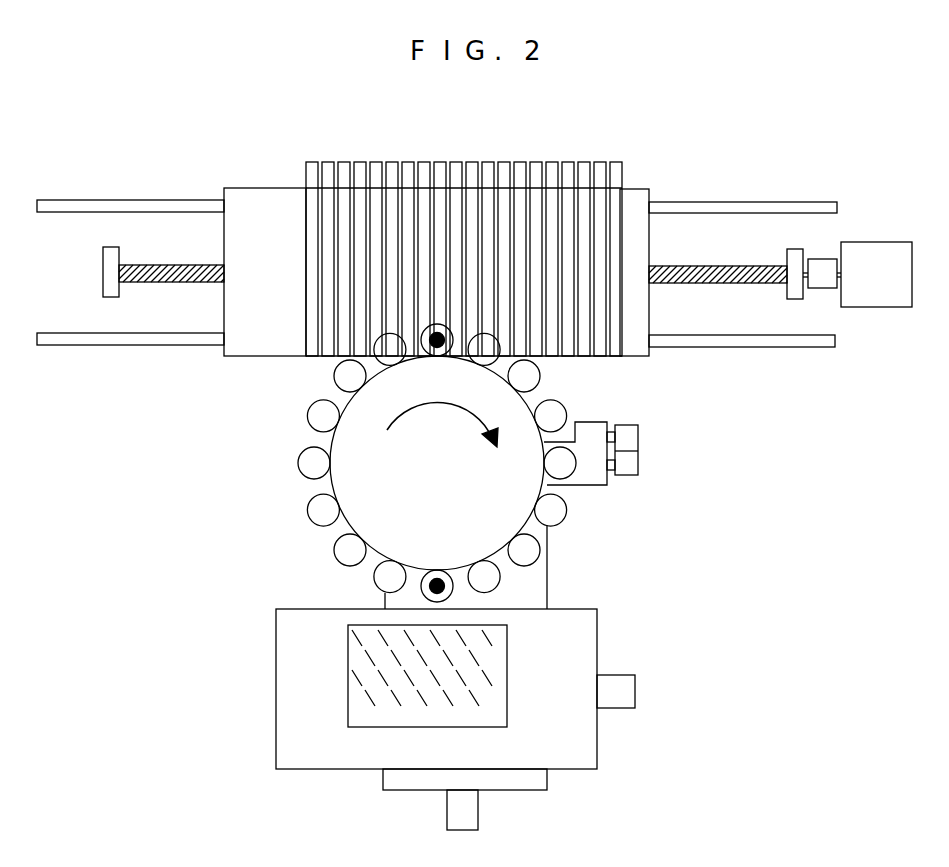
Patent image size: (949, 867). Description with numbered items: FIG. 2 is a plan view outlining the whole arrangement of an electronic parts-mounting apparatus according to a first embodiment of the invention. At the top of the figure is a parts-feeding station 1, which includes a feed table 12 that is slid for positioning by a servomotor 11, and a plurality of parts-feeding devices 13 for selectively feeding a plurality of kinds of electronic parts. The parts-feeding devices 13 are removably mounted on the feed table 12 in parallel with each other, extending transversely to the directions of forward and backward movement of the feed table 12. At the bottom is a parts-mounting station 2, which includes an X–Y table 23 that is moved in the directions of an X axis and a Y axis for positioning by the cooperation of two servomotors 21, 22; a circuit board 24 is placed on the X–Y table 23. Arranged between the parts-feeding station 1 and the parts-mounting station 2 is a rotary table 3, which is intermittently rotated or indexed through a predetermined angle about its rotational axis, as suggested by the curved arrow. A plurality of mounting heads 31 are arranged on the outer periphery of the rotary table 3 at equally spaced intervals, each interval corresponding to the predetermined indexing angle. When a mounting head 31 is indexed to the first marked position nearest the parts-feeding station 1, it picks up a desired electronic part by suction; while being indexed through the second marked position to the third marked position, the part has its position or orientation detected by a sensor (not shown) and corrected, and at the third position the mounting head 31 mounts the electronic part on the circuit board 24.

The parts-feeding station 1 is at (315, 143).
The servomotor 11 is at (882, 298).
The feed table 12 is at (262, 208).
The parts-feeding devices 13 is at (492, 162).
The parts-mounting station 2 is at (662, 631).
The servomotor 21 is at (625, 690).
The servomotor 22 is at (453, 820).
The X–Y table 23 is at (287, 739).
The circuit board 24 is at (360, 672).
The rotary table 3 is at (508, 520).
The mounting heads 31 is at (317, 513).